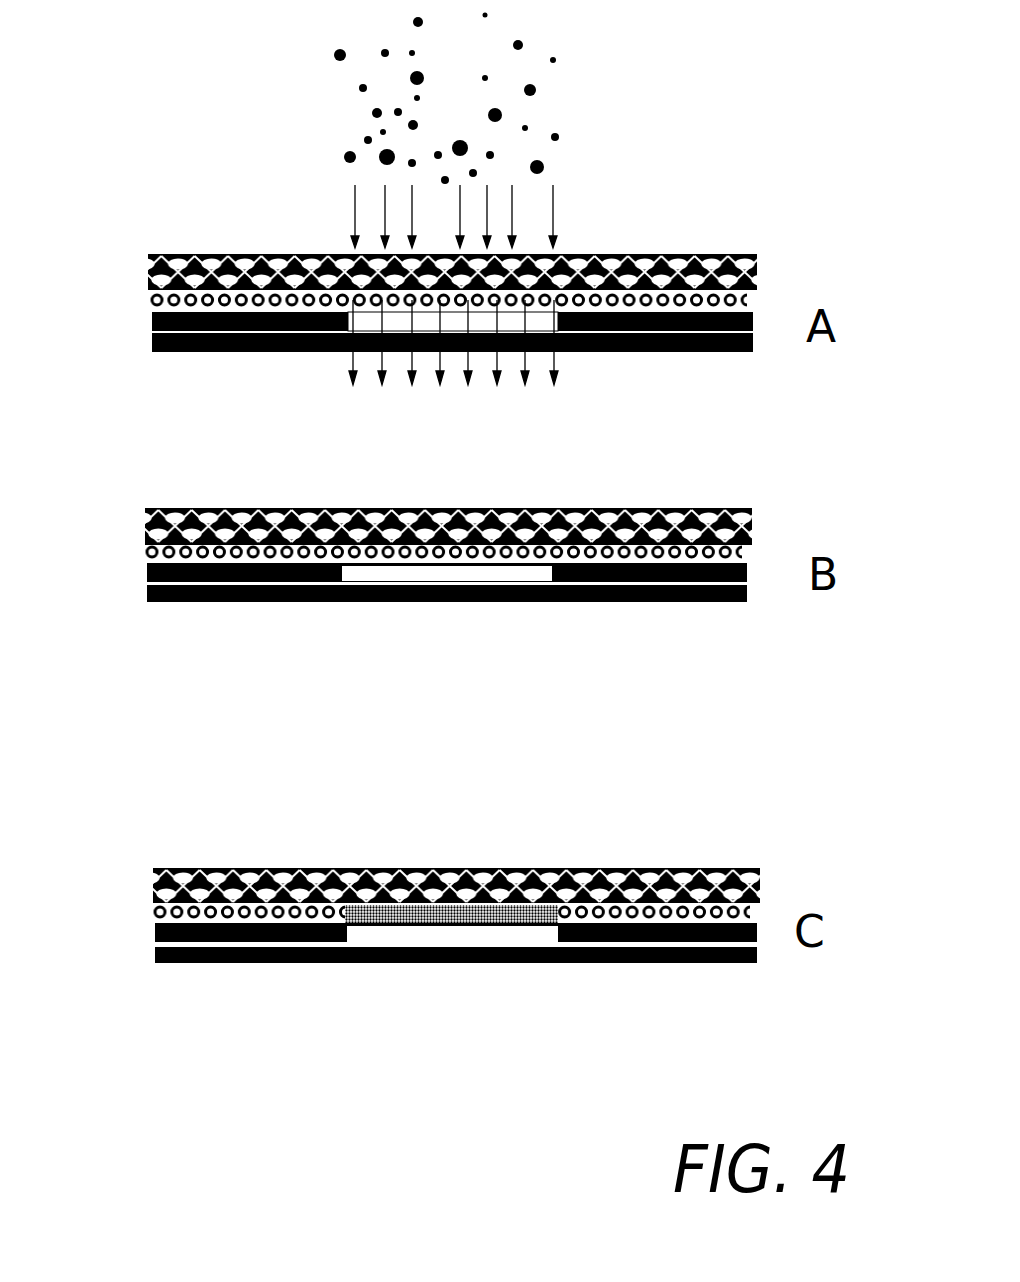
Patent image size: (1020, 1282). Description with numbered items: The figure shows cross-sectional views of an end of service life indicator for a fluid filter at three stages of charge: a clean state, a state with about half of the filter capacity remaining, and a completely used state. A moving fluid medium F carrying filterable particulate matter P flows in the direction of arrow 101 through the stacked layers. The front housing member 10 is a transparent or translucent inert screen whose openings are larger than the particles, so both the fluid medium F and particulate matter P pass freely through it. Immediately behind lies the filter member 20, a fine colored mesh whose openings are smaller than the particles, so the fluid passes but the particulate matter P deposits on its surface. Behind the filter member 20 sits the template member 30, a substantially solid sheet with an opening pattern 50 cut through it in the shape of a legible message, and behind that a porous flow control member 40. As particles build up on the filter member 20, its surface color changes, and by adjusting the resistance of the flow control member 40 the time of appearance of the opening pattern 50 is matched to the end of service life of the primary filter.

In FIG. 4A, the front housing member 10 is at (150, 272).
In FIG. 4B, the front housing member 10 is at (145, 523).
In FIG. 4C, the front housing member 10 is at (152, 888).
In FIG. 4A, the filter member 20 is at (152, 302).
In FIG. 4B, the filter member 20 is at (147, 560).
In FIG. 4C, the filter member 20 is at (155, 915).
In FIG. 4A, the template member 30 is at (152, 330).
In FIG. 4B, the template member 30 is at (147, 572).
In FIG. 4C, the template member 30 is at (155, 932).
In FIG. 4A, the flow control member 40 is at (152, 347).
In FIG. 4B, the flow control member 40 is at (262, 600).
In FIG. 4C, the flow control member 40 is at (265, 963).
In FIG. 4A, the opening pattern 50 is at (537, 326).
In FIG. 4B, the opening pattern 50 is at (455, 575).
In FIG. 4C, the opening pattern 50 is at (440, 905).
In FIG. 4A, the arrow 101 is at (553, 207).
In FIG. 4A, the particulate matter P is at (485, 78).
In FIG. 4A, the fluid medium F is at (452, 110).